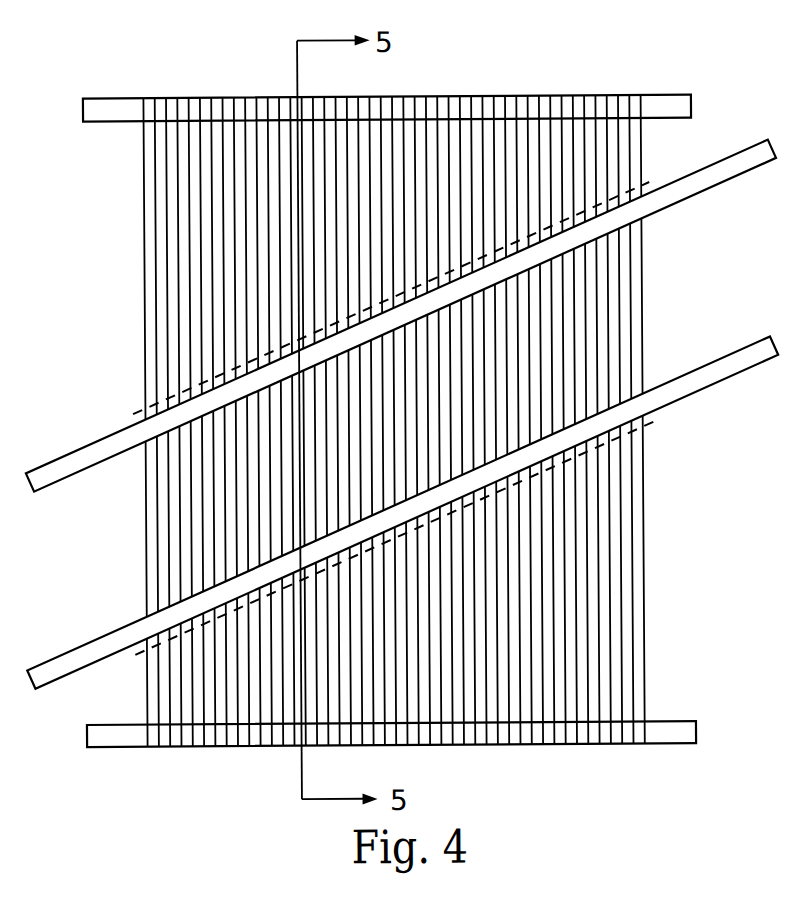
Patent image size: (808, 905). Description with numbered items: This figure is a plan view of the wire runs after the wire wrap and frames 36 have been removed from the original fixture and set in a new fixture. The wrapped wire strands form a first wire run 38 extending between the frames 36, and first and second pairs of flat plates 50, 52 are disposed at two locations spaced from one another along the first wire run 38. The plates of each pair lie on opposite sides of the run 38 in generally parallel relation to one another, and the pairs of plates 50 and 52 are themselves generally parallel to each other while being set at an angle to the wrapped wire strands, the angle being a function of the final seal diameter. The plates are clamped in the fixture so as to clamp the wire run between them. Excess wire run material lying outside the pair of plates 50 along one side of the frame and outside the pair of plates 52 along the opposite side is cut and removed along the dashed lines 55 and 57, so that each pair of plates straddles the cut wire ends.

The frames 36 is at (445, 112).
The first wire run 38 is at (588, 342).
The first pair of flat plates 50 is at (698, 190).
The second pair of flat plates 52 is at (725, 372).
The dashed line 55 is at (648, 184).
The dashed line 57 is at (653, 422).